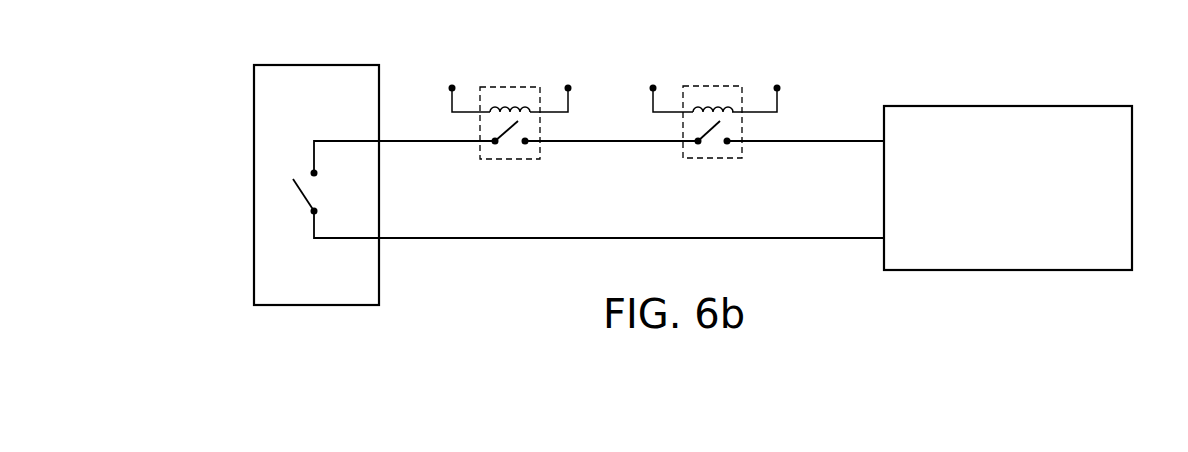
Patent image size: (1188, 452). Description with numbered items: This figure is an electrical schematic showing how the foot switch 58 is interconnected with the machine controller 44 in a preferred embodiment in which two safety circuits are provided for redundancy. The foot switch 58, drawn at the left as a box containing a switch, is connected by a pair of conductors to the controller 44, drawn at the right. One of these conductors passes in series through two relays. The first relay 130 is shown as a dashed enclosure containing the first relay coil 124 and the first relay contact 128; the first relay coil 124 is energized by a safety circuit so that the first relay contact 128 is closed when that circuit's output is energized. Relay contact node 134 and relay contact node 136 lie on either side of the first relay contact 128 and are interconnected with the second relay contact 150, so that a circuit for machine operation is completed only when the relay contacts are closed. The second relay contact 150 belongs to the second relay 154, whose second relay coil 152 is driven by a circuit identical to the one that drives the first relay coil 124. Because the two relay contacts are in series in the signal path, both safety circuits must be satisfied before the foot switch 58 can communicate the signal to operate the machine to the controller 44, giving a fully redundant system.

The controller 44 is at (1003, 106).
The foot switch 58 is at (277, 248).
The first relay coil 124 is at (508, 105).
The first relay contact 128 is at (510, 143).
The first relay 130 is at (523, 112).
The relay contact node 134 is at (438, 144).
The relay contact node 136 is at (645, 144).
The second relay contact 150 is at (713, 143).
The second relay coil 152 is at (712, 105).
The second relay 154 is at (724, 112).